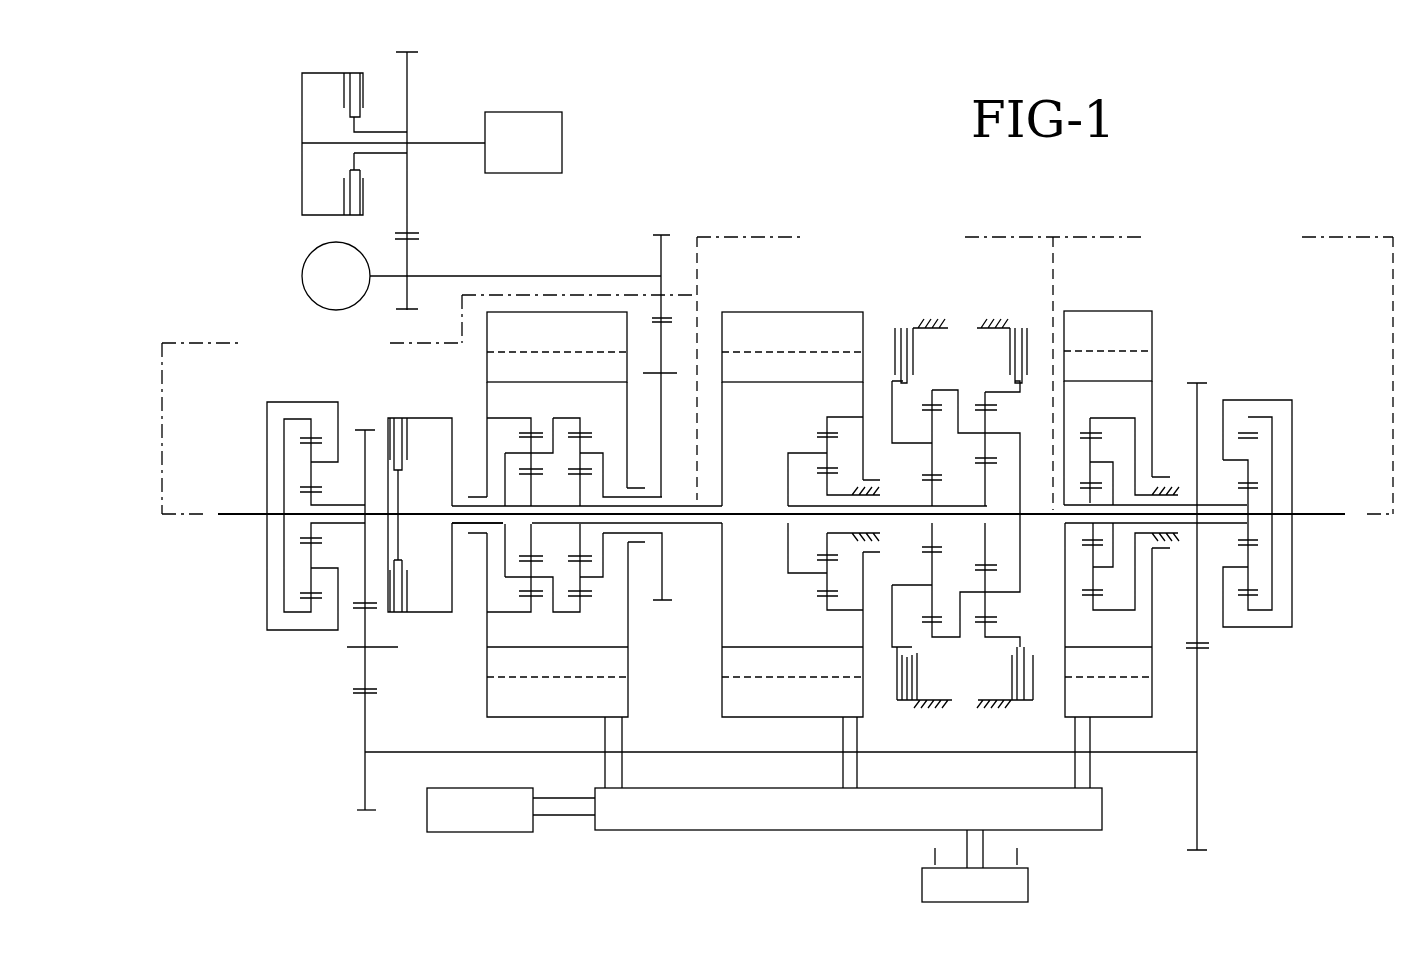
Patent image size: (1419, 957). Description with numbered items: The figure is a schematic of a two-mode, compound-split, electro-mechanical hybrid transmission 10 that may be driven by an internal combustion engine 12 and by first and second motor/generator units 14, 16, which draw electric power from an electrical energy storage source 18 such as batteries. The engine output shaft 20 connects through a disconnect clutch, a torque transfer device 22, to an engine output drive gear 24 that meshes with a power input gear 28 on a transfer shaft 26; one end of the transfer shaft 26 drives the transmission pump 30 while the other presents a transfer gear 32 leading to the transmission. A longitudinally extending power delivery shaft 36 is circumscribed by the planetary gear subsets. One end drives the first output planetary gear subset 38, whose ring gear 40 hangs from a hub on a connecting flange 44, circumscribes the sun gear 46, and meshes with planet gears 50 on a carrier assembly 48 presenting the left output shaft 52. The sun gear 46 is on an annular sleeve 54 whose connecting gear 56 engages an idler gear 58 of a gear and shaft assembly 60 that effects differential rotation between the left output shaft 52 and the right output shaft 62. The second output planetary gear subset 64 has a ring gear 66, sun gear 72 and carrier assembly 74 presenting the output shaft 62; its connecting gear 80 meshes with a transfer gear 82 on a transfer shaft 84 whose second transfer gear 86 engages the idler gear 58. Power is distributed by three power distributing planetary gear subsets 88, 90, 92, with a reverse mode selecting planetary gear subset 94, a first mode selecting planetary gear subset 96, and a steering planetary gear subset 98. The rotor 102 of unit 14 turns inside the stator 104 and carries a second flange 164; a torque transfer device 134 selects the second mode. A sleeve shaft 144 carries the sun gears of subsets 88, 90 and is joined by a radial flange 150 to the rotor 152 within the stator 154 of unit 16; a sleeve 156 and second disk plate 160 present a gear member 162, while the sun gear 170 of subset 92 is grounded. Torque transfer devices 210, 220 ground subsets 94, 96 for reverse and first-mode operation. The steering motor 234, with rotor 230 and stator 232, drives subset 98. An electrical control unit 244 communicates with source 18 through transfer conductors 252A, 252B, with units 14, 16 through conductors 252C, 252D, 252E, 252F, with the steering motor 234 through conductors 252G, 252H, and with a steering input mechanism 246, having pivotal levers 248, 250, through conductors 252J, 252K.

The hybrid transmission 10 is at (1323, 186).
The internal combustion engine 12 is at (539, 156).
The first motor/generator unit 14 is at (483, 373).
The second motor/generator unit 16 is at (809, 306).
The electrical energy storage source 18 is at (464, 823).
The output shaft 20 is at (445, 143).
The torque transfer device 22 is at (332, 103).
The engine output drive gear 24 is at (407, 200).
The transfer shaft 26 is at (549, 276).
The power input gear 28 is at (407, 255).
The transmission pump 30 is at (333, 270).
The transfer gear 32 is at (661, 255).
The power delivery shaft 36 is at (428, 518).
The first output planetary gear subset 38 is at (308, 633).
The outer gear member 40 is at (322, 435).
The connecting flange 44 is at (284, 455).
The inner gear member 46 is at (315, 492).
The carrier assembly 48 is at (265, 418).
The planet gears 50 is at (311, 575).
The output shaft 52 is at (237, 519).
The annular sleeve 54 is at (345, 525).
The connecting gear 56 is at (365, 430).
The idler gear 58 is at (365, 668).
The gear and shaft assembly 60 is at (350, 820).
The second output shaft 62 is at (1322, 518).
The second output planetary gear subset 64 is at (1284, 637).
The outer gear member 66 is at (1241, 432).
The inner gear member 72 is at (1253, 497).
The carrier assembly 74 is at (1242, 568).
The connecting gear 80 is at (1197, 408).
The transfer gear 82 is at (1197, 815).
The transfer shaft 84 is at (1155, 753).
The second transfer gear 86 is at (364, 790).
The first power distributing planetary gear subset 88 is at (505, 446).
The second power distributing planetary gear subset 90 is at (611, 446).
The third power distributing planetary gear subset 92 is at (811, 421).
The reverse mode selecting planetary gear subset 94 is at (930, 386).
The first mode selecting planetary gear subset 96 is at (994, 386).
The steering planetary gear subset 98 is at (1084, 422).
The rotor 102 is at (509, 380).
The stator 104 is at (565, 345).
The torque transfer device 134 is at (412, 432).
The sleeve shaft 144 is at (697, 525).
The radial flange 150 is at (722, 490).
The rotor 152 is at (745, 380).
The stator 154 is at (800, 345).
The sleeve 156 is at (617, 536).
The second disk plate 160 is at (672, 600).
The gear member 162 is at (657, 602).
The second flange 164 is at (781, 552).
The inner gear member 170 is at (897, 506).
The torque transfer device 210 is at (887, 345).
The torque transfer device 220 is at (1040, 345).
The rotor 230 is at (1076, 380).
The stator 232 is at (1098, 345).
The steering motor 234 is at (1107, 308).
The electrical control unit 244 is at (763, 823).
The steering input mechanism 246 is at (953, 898).
The pivotal lever 248 is at (935, 860).
The pivotal lever 250 is at (1017, 860).
The transfer conductor 252A is at (560, 798).
The transfer conductor 252B is at (563, 816).
The transfer conductor 252C is at (605, 733).
The transfer conductor 252D is at (622, 734).
The transfer conductor 252E is at (843, 733).
The transfer conductor 252F is at (857, 734).
The transfer conductor 252G is at (1075, 733).
The transfer conductor 252H is at (1090, 734).
The transfer conductor 252J is at (967, 842).
The transfer conductor 252K is at (985, 842).